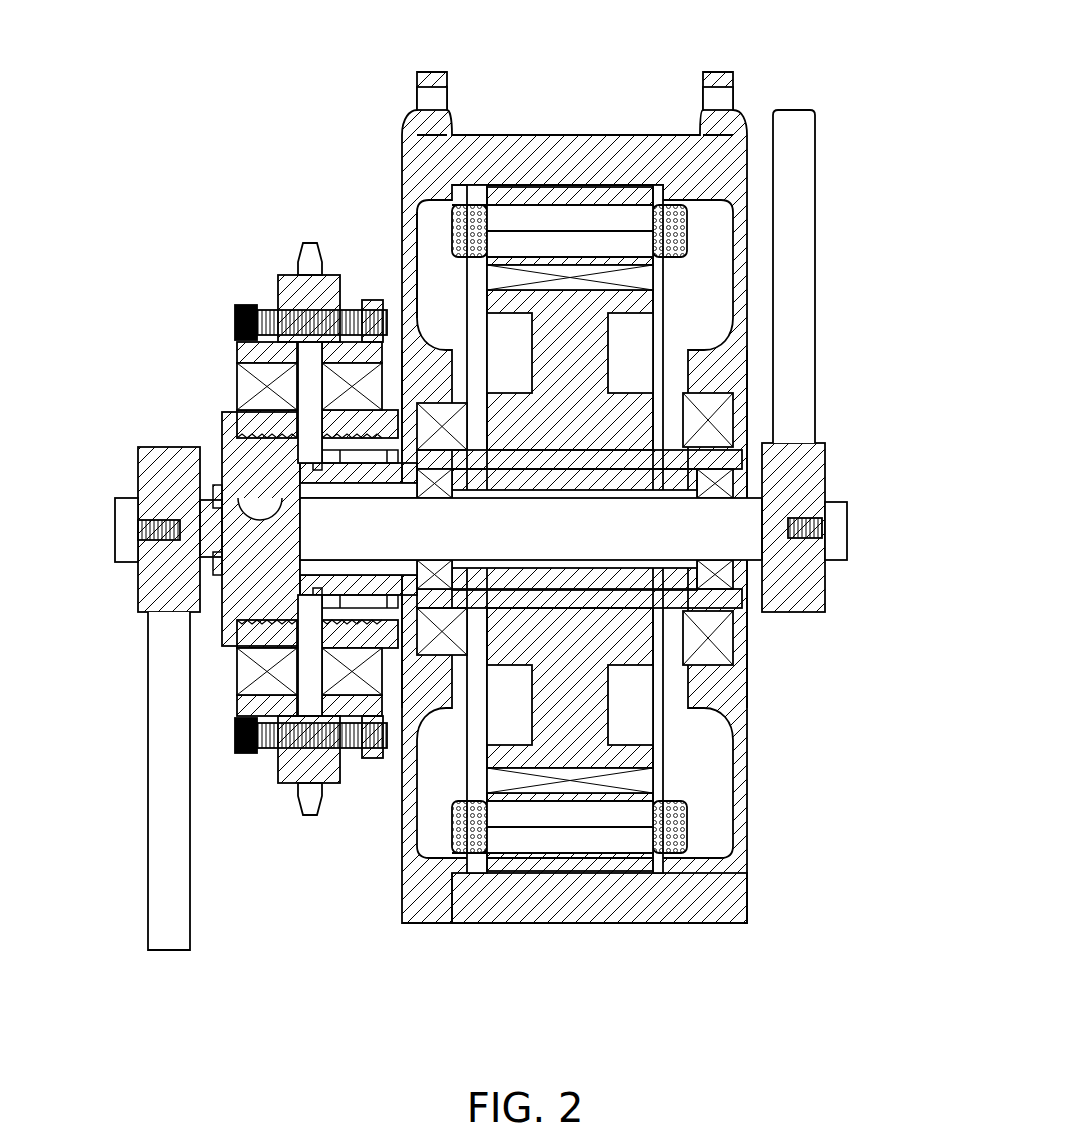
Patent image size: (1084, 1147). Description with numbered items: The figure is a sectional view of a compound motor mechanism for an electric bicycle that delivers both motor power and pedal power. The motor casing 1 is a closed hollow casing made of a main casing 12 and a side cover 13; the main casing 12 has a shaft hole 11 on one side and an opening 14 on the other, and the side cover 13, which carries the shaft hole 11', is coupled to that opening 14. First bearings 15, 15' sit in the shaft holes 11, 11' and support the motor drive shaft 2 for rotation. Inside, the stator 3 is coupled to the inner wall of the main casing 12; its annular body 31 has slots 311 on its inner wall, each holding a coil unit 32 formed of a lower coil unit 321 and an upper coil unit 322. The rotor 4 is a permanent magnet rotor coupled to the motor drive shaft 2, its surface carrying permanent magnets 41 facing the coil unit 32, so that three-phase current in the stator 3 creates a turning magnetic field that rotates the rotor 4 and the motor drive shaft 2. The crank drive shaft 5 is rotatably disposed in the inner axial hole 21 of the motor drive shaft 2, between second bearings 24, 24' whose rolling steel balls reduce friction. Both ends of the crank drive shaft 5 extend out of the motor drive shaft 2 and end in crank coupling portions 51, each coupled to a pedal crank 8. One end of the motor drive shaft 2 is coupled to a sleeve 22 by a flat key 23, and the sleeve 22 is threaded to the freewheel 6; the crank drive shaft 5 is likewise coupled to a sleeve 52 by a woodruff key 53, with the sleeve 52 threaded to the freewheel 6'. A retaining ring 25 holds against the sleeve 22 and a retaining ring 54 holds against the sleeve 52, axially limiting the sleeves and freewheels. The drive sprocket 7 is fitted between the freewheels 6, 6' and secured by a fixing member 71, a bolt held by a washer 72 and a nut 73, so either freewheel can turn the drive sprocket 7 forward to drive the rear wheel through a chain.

The motor casing 1 is at (575, 923).
The shaft hole 11 is at (802, 557).
The shaft hole 11' is at (363, 621).
The main casing 12 is at (745, 880).
The side cover 13 is at (452, 900).
The opening 14 is at (457, 880).
The first bearing 15 is at (672, 218).
The first bearing 15' is at (565, 591).
The motor drive shaft 2 is at (720, 430).
The inner axial hole 21 is at (700, 470).
The sleeve 22 is at (287, 407).
The flat key 23 is at (372, 455).
The second bearing 24 is at (672, 529).
The second bearing 24' is at (258, 632).
The retaining ring 25 is at (245, 645).
The stator 3 is at (553, 444).
The annular body 31 is at (613, 187).
The slot 311 is at (537, 203).
The coil unit 32 is at (690, 250).
The lower coil unit 321 is at (455, 205).
The upper coil unit 322 is at (440, 335).
The rotor 4 is at (672, 262).
The permanent magnet 41 is at (685, 235).
The crank drive shaft 5 is at (735, 545).
The crank coupling portion 51 is at (795, 585).
The sleeve 52 is at (237, 447).
The woodruff key 53 is at (215, 490).
The retaining ring 54 is at (135, 525).
The freewheel 6 is at (322, 249).
The freewheel 6' is at (192, 312).
The drive sprocket 7 is at (285, 300).
The fixing member 71 is at (255, 310).
The washer 72 is at (290, 770).
The nut 73 is at (330, 745).
The pedal crank 8 is at (800, 362).